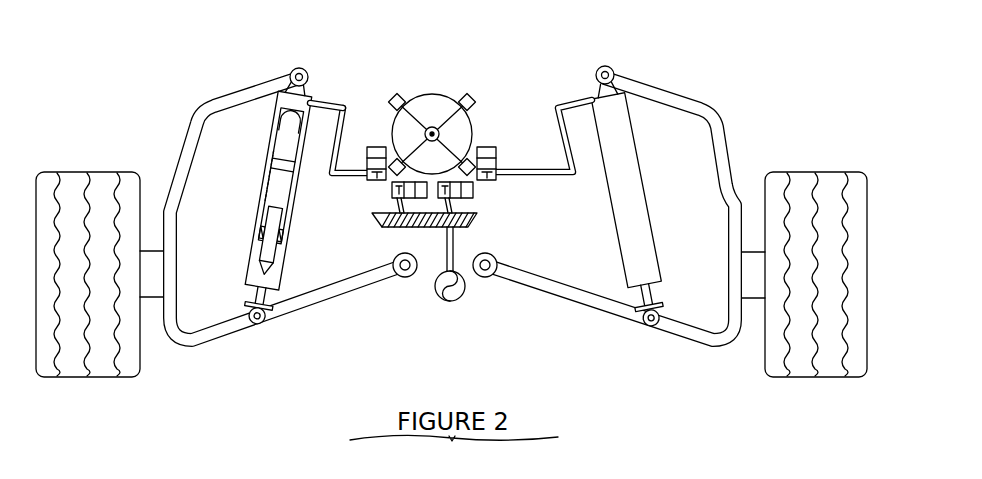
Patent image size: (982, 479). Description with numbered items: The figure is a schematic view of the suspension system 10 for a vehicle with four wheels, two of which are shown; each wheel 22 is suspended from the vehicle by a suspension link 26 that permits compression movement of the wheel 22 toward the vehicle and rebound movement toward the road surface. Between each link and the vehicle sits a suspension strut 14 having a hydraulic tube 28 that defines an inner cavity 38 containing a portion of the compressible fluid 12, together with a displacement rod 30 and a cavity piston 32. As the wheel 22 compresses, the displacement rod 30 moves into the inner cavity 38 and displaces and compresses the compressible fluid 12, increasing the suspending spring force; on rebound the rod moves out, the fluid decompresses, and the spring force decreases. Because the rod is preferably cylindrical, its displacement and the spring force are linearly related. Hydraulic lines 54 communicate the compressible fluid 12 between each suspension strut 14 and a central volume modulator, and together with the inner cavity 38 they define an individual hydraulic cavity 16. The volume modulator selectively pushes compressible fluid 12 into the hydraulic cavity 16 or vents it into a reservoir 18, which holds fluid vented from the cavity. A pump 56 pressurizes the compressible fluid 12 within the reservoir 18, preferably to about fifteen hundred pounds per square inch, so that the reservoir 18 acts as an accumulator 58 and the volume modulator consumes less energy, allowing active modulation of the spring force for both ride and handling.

The suspension system 10 is at (492, 50).
The compressible fluid 12 is at (303, 140).
The suspension strut 14 is at (262, 140).
The hydraulic cavity 16 is at (323, 105).
The reservoir 18 is at (473, 213).
The wheel 22 is at (122, 378).
The suspension link 26 is at (188, 148).
The hydraulic tube 28 is at (270, 100).
The displacement rod 30 is at (273, 213).
The cavity piston 32 is at (277, 158).
The inner cavity 38 is at (317, 104).
The hydraulic line 54 is at (348, 176).
The pump 56 is at (460, 297).
The accumulator 58 is at (473, 221).